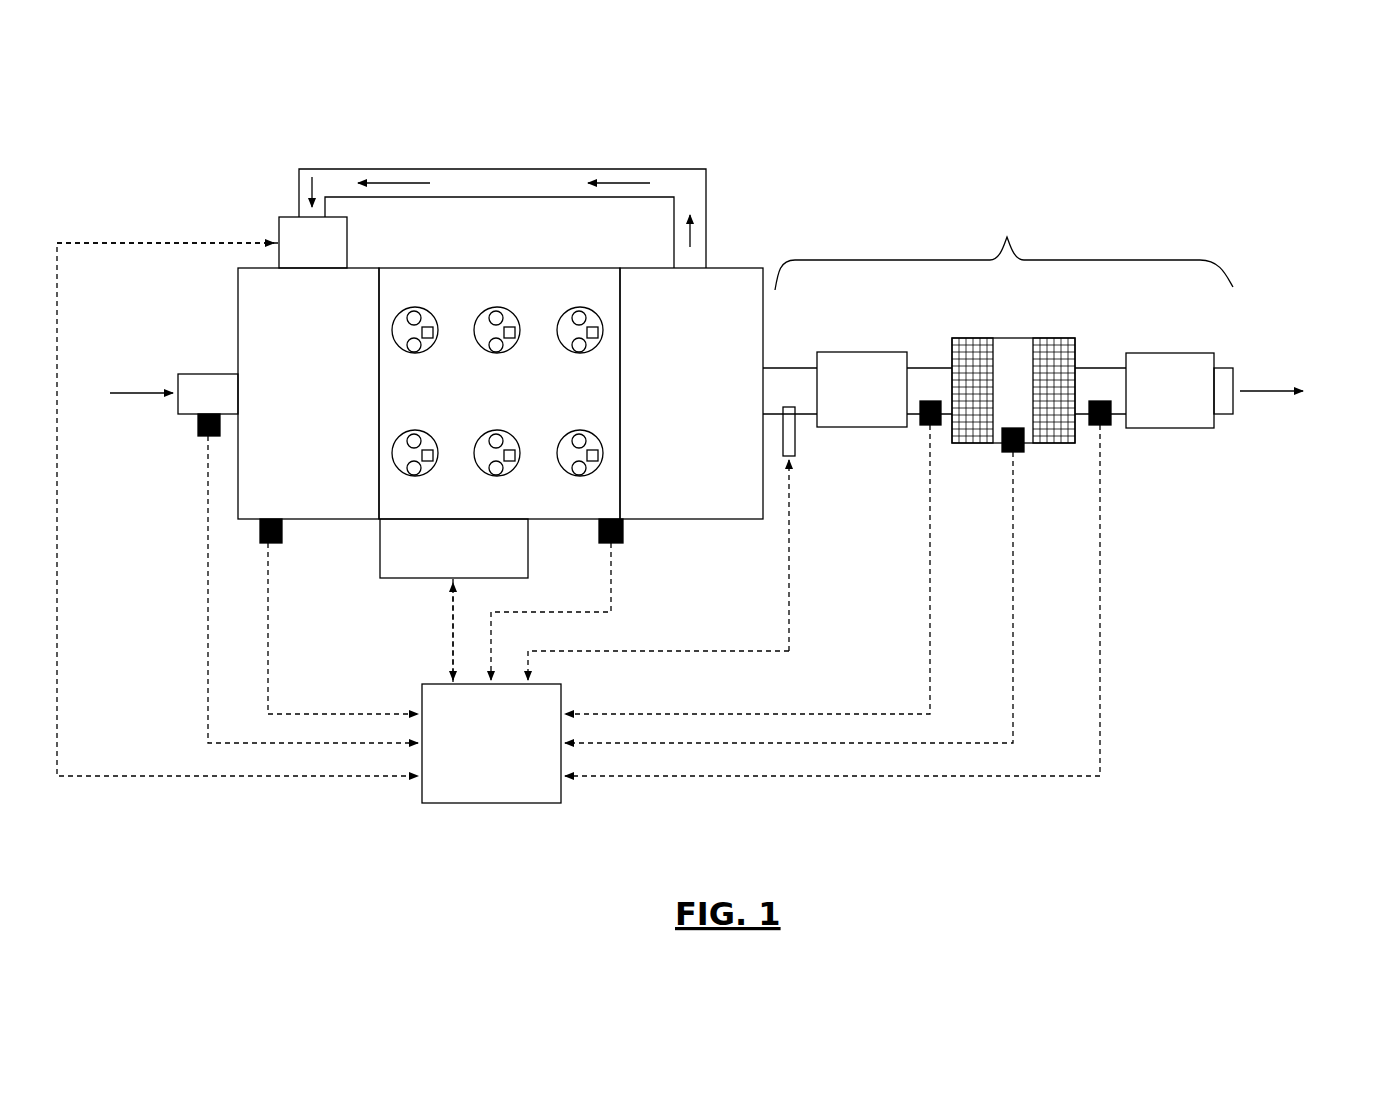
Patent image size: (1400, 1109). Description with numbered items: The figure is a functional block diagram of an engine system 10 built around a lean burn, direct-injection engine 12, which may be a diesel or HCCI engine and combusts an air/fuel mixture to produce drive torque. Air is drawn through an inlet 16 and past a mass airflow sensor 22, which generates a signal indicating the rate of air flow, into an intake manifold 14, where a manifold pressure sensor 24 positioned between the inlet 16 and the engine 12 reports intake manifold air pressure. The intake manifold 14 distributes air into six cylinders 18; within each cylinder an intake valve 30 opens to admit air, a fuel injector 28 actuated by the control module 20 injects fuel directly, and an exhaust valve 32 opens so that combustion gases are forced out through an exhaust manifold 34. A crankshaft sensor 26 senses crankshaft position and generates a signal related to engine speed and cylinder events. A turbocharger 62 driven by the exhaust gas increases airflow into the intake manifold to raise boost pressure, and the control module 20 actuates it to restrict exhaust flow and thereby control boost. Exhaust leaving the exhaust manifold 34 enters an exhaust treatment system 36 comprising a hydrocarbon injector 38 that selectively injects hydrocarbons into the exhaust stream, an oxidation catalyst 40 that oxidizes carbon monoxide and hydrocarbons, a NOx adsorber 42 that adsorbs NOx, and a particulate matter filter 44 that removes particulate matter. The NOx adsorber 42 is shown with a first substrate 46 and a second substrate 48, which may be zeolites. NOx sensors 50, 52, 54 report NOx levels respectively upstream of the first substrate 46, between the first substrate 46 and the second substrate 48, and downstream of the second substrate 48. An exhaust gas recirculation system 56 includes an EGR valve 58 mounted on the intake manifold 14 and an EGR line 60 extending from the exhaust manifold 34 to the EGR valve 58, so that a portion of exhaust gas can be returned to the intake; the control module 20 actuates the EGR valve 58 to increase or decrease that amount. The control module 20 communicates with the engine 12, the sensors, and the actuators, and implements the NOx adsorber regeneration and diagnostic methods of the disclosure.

The engine system 10 is at (232, 134).
The engine 12 is at (503, 268).
The intake manifold 14 is at (238, 294).
The inlet 16 is at (208, 374).
The cylinders 18 is at (566, 470).
The control module 20 is at (488, 803).
The mass airflow (MAF) sensor 22 is at (198, 430).
The manifold pressure (MAP) sensor 24 is at (260, 533).
The crankshaft sensor 26 is at (623, 531).
The fuel injectors 28 is at (509, 332).
The intake valve 30 is at (414, 318).
The exhaust valve 32 is at (416, 468).
The exhaust manifold 34 is at (723, 268).
The exhaust treatment system 36 is at (1004, 249).
The hydrocarbon (HC) injector 38 is at (792, 458).
The oxidation catalyst (OC) 40 is at (865, 352).
The NOx adsorber 42 is at (1022, 365).
The particulate matter filter (PMF) 44 is at (1172, 353).
The first substrate 46 is at (972, 346).
The second substrate 48 is at (1055, 346).
The NOx sensor 50 is at (920, 428).
The NOx sensor 52 is at (1008, 452).
The NOx sensor 54 is at (1106, 427).
The exhaust gas recirculation (EGR) system 56 is at (502, 179).
The EGR valve 58 is at (347, 243).
The EGR line 60 is at (636, 168).
The turbocharger 62 is at (380, 560).